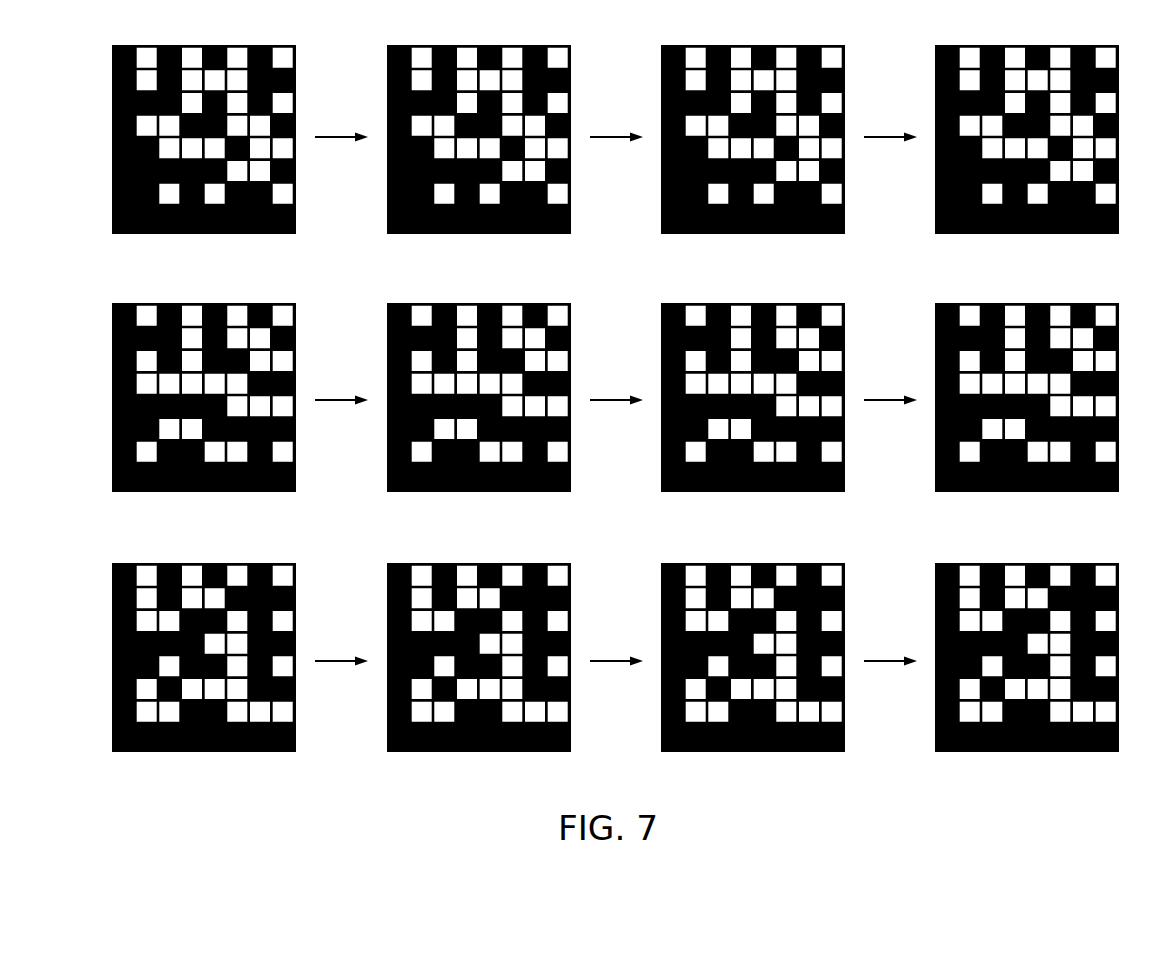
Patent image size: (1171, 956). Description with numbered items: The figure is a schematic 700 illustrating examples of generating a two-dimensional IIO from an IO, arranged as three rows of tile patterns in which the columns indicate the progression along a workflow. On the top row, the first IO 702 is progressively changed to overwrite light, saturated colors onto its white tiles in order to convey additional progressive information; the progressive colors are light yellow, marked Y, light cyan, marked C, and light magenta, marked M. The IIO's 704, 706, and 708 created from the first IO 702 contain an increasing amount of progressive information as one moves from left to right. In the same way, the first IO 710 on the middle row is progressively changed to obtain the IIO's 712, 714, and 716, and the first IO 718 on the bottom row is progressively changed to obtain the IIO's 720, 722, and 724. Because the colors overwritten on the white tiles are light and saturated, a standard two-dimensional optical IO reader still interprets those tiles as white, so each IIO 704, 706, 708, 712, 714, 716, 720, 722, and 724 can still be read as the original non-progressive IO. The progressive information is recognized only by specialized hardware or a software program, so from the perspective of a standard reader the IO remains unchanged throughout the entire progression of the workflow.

The schematic 700 is at (626, 801).
The first IO 702 is at (182, 161).
The IIO 704 is at (457, 161).
The IIO 706 is at (731, 161).
The IIO 708 is at (1005, 161).
The first IO 710 is at (182, 419).
The IIO 712 is at (457, 419).
The IIO 714 is at (731, 419).
The IIO 716 is at (1005, 419).
The first IO 718 is at (182, 678).
The IIO 720 is at (457, 678).
The IIO 722 is at (753, 678).
The IIO 724 is at (1027, 678).